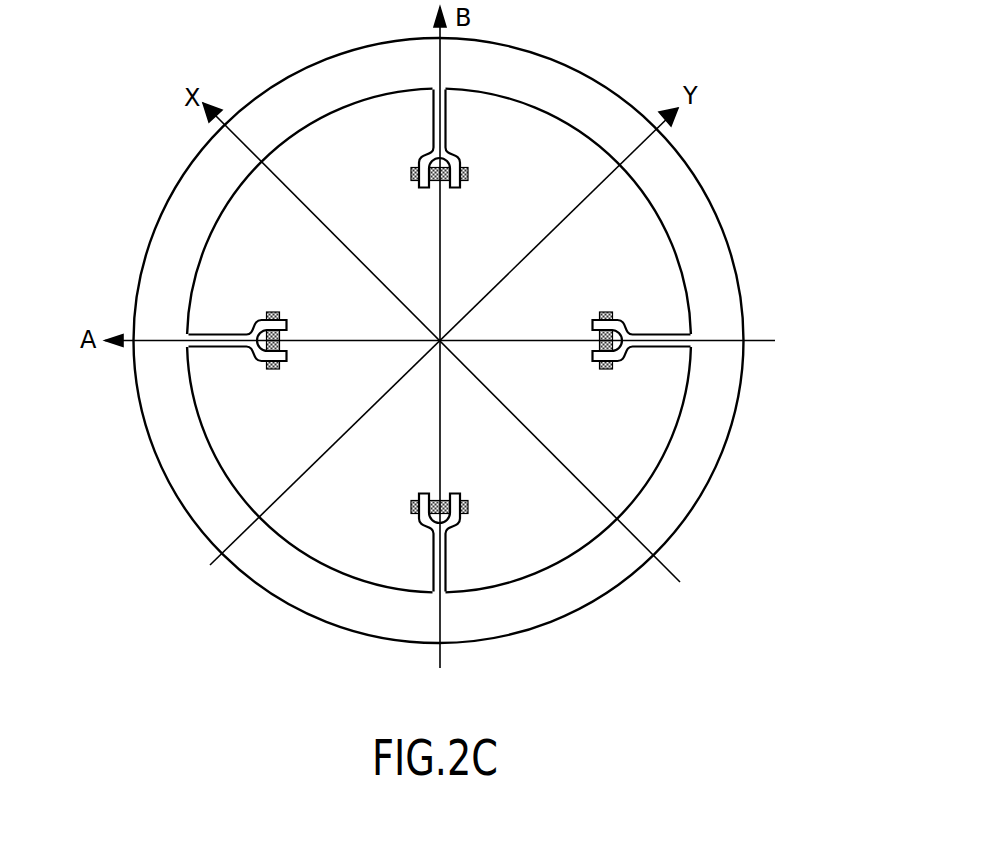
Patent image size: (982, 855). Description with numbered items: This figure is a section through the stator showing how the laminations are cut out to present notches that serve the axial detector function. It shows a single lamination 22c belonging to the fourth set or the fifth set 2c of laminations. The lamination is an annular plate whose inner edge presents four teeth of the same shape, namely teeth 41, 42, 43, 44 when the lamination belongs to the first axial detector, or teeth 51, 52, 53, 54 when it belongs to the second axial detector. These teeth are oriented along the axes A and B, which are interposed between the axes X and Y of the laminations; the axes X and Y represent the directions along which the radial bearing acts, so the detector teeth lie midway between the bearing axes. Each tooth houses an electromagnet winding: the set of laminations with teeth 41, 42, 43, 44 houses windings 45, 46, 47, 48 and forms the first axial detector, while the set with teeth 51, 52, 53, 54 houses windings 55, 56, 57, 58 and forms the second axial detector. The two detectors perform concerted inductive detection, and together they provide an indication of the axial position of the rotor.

The fifth set of laminations 2c is at (466, 354).
The lamination 22c is at (705, 252).
The tooth 41 is at (489, 159).
The tooth 51 is at (462, 152).
The tooth 42 is at (718, 390).
The tooth 52 is at (632, 355).
The tooth 43 is at (494, 543).
The tooth 53 is at (455, 519).
The tooth 44 is at (251, 308).
The tooth 54 is at (247, 318).
The electromagnet winding 45 is at (385, 198).
The electromagnet winding 55 is at (412, 173).
The electromagnet winding 46 is at (582, 393).
The electromagnet winding 56 is at (610, 368).
The electromagnet winding 47 is at (360, 513).
The electromagnet winding 57 is at (412, 502).
The electromagnet winding 48 is at (268, 395).
The electromagnet winding 58 is at (265, 368).